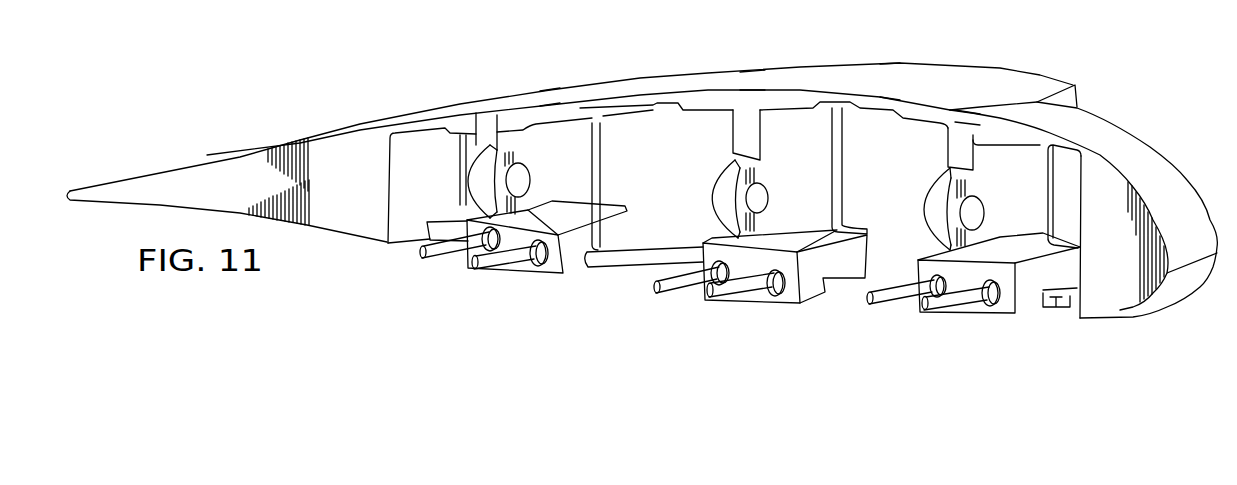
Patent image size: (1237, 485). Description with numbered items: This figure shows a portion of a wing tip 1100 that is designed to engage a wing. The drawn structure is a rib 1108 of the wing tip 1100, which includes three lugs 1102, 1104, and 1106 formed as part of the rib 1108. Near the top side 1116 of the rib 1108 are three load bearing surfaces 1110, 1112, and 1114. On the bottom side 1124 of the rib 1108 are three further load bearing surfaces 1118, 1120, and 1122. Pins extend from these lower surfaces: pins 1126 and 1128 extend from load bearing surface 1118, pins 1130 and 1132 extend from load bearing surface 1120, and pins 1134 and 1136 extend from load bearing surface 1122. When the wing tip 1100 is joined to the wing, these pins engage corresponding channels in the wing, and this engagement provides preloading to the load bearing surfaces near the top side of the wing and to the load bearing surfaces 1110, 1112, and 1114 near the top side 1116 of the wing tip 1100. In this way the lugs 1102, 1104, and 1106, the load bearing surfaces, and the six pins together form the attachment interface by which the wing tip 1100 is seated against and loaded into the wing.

The wing tip 1100 is at (1036, 73).
The lug 1102 is at (480, 142).
The lug 1104 is at (705, 190).
The lug 1106 is at (920, 203).
The rib 1108 is at (1117, 306).
The load bearing surface 1110 is at (553, 108).
The load bearing surface 1112 is at (753, 99).
The load bearing surface 1114 is at (967, 120).
The top side 1116 is at (888, 75).
The load bearing surface 1118 is at (547, 275).
The load bearing surface 1120 is at (787, 293).
The load bearing surface 1122 is at (1007, 306).
The bottom side 1124 is at (637, 276).
The pin 1126 is at (435, 265).
The pin 1128 is at (493, 275).
The pin 1130 is at (683, 296).
The pin 1132 is at (750, 296).
The pin 1134 is at (897, 300).
The pin 1136 is at (947, 311).